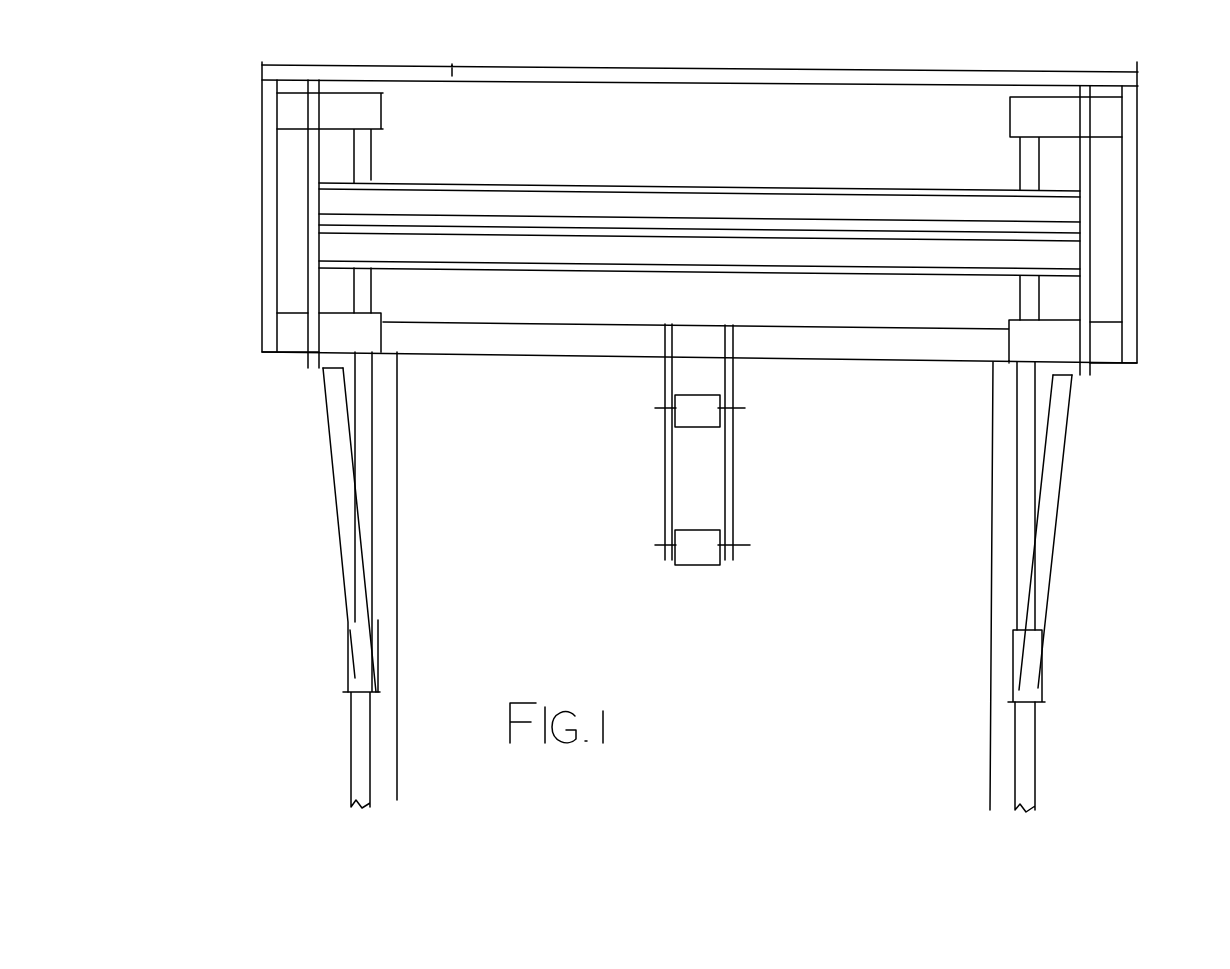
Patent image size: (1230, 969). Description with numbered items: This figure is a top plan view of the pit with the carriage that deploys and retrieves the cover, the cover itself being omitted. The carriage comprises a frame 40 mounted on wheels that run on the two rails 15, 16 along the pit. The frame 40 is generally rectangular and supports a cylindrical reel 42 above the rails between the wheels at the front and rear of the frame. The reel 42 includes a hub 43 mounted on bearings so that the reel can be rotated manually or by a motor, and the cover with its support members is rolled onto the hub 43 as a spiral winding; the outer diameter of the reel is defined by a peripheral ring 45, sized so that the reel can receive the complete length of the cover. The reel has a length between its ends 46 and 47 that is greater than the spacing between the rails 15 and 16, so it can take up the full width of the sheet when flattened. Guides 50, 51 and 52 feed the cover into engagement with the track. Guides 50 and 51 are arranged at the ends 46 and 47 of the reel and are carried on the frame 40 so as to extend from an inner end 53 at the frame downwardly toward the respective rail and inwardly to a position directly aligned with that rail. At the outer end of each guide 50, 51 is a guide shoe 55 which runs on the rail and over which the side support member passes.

The rail 15 is at (388, 522).
The rail 16 is at (1003, 472).
The frame 40 is at (258, 157).
The cylindrical reel 42 is at (947, 147).
The hub 43 is at (694, 190).
The peripheral ring 45 is at (1098, 97).
The end of reel 46 is at (1092, 234).
The end of reel 47 is at (320, 227).
The guide 50 is at (340, 438).
The guide 51 is at (1060, 450).
The guide 52 is at (735, 442).
The inner end 53 is at (338, 378).
The guide shoe 55 is at (1030, 687).